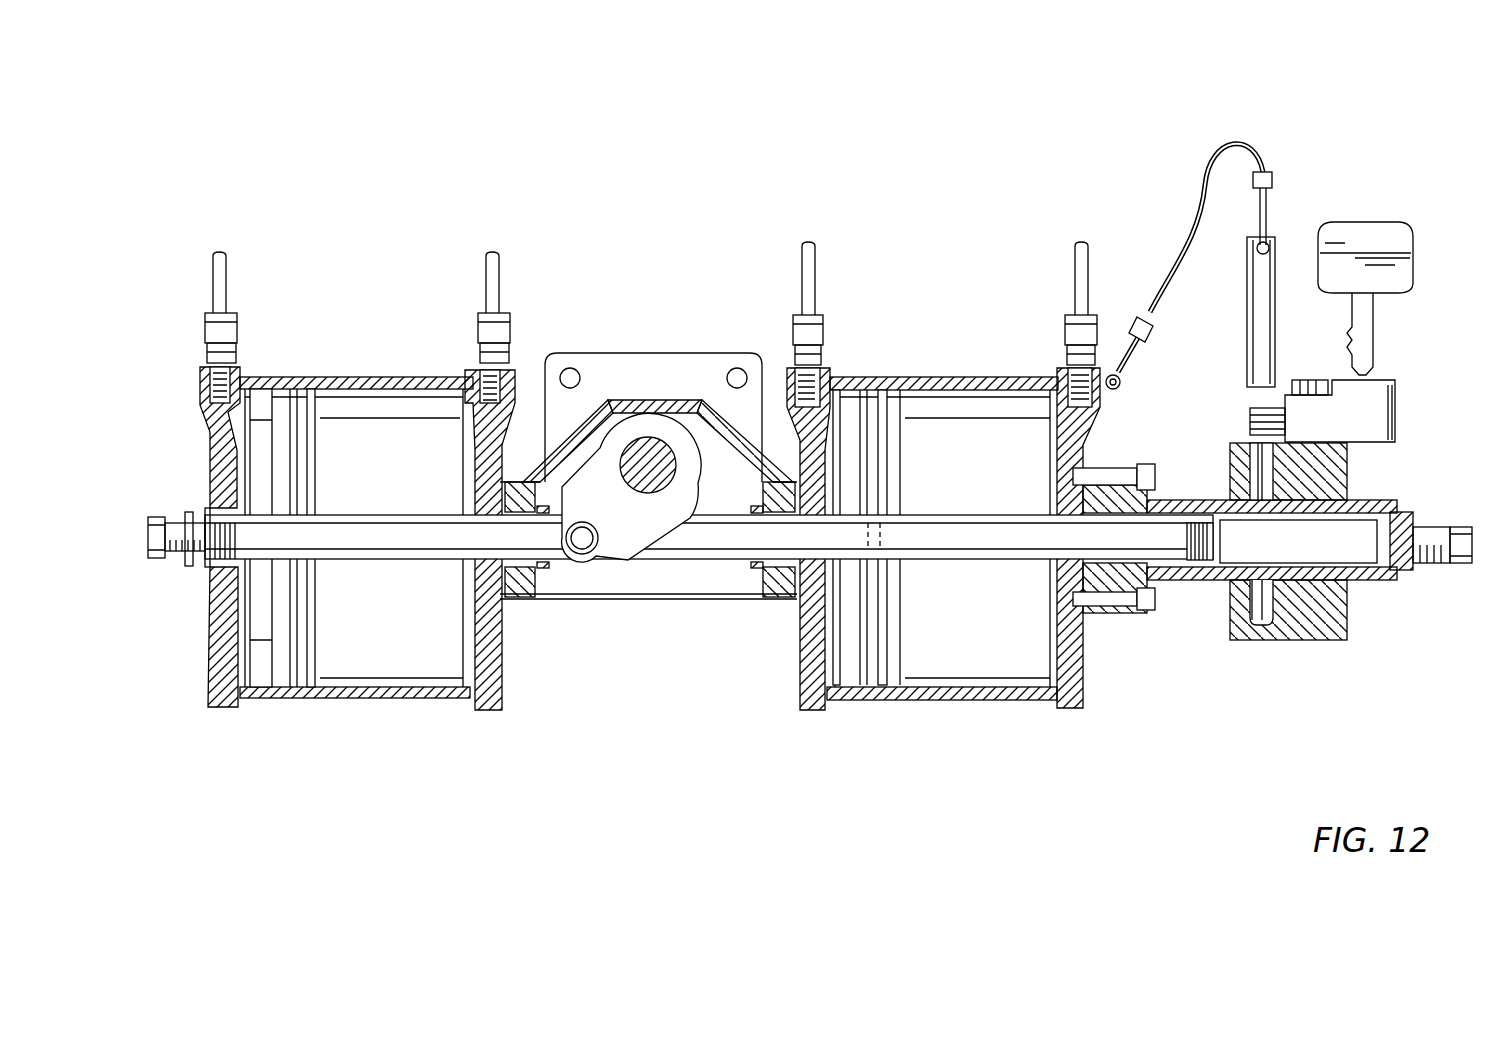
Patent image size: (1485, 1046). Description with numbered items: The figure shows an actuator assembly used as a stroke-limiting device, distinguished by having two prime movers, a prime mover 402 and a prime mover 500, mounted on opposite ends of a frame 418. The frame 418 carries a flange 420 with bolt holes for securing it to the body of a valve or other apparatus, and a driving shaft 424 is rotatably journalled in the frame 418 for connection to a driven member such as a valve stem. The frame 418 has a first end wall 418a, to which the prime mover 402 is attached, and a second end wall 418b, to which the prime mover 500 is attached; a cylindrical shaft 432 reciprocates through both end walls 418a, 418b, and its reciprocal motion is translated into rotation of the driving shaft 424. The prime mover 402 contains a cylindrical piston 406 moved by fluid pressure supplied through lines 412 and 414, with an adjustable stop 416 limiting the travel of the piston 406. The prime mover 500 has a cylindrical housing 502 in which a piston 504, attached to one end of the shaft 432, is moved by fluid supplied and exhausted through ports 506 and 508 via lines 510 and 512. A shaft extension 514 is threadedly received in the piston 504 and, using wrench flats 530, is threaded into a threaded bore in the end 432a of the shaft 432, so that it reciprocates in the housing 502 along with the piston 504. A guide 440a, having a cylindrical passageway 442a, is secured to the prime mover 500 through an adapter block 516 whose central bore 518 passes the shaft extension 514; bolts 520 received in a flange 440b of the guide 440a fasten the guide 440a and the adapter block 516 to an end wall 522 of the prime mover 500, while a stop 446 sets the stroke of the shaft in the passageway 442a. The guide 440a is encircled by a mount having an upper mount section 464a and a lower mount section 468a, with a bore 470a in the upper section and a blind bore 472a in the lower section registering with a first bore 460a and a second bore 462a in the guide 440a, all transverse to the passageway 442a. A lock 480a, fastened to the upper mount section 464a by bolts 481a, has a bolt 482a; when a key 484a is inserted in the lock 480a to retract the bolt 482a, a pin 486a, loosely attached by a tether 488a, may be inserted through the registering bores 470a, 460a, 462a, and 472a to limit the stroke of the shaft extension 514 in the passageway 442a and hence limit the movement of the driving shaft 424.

The prime mover 402 is at (381, 368).
The piston 406 is at (300, 690).
The line 412 is at (220, 284).
The line 414 is at (490, 276).
The adjustable stop 416 is at (156, 566).
The frame 418 is at (598, 397).
The first end wall 418a is at (495, 675).
The second end wall 418b is at (807, 675).
The flange 420 is at (674, 365).
The driving shaft 424 is at (650, 492).
The shaft 432 is at (388, 560).
The end of shaft 432a is at (805, 596).
The guide 440a is at (1207, 582).
The flange 440b is at (1112, 615).
The cylindrical passageway 442a is at (1352, 552).
The stop 446 is at (1428, 545).
The first bore 460a is at (1248, 498).
The second bore 462a is at (1270, 643).
The upper mount section 464a is at (1342, 460).
The lower mount section 468a is at (1323, 630).
The bore 470a is at (1263, 476).
The blind bore 472a is at (1253, 637).
The lock 480a is at (1390, 413).
The bolts 481a is at (1312, 380).
The bolt 482a is at (1278, 420).
The key 484a is at (1386, 233).
The pin 486a is at (1252, 320).
The tether 488a is at (1228, 142).
The prime mover 500 is at (940, 368).
The cylindrical housing 502 is at (965, 701).
The piston 504 is at (890, 672).
The port 506 is at (826, 412).
The port 508 is at (1067, 412).
The line 510 is at (806, 262).
The line 512 is at (1078, 262).
The shaft extension 514 is at (1073, 543).
The adapter block 516 is at (1098, 612).
The central bore 518 is at (1113, 485).
The bolts 520 is at (1148, 466).
The end wall 522 is at (1067, 702).
The wrench flats 530 is at (1214, 541).